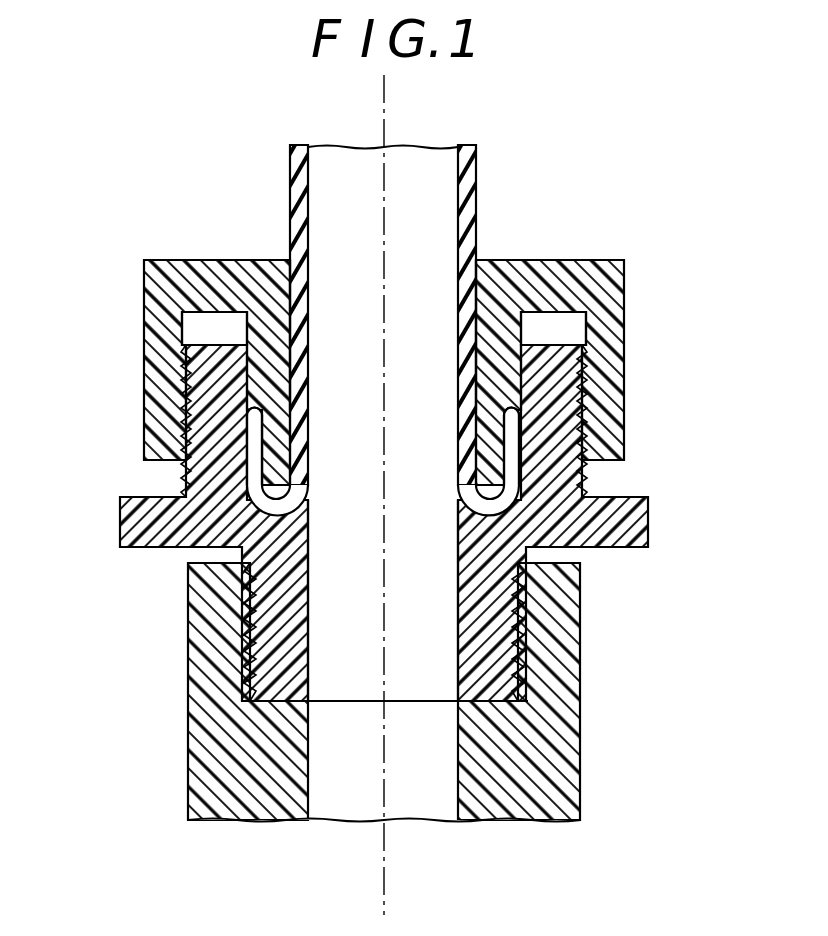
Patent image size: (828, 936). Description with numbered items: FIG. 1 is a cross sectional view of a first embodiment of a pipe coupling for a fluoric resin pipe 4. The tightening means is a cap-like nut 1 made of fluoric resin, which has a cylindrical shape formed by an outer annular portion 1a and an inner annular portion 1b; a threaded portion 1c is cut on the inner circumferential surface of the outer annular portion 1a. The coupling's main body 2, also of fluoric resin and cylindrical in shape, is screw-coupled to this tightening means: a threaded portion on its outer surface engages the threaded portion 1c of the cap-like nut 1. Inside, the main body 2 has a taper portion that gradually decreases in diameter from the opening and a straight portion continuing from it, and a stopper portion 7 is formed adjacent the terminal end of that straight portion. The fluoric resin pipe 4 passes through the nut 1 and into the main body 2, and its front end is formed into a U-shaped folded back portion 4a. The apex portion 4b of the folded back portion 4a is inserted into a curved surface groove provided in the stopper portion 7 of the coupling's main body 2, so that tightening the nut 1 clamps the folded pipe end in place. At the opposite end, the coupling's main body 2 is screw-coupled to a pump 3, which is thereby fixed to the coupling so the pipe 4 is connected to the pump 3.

The cap-like nut 1 is at (210, 259).
The outer annular portion 1a is at (148, 418).
The inner annular portion 1b is at (276, 327).
The threaded portion 1c is at (185, 318).
The coupling's main body 2 is at (125, 547).
The pump 3 is at (190, 758).
The fluoric resin pipe 4 is at (306, 176).
The folded back portion 4a is at (262, 438).
The apex portion 4b is at (278, 504).
The stopper portion 7 is at (307, 533).